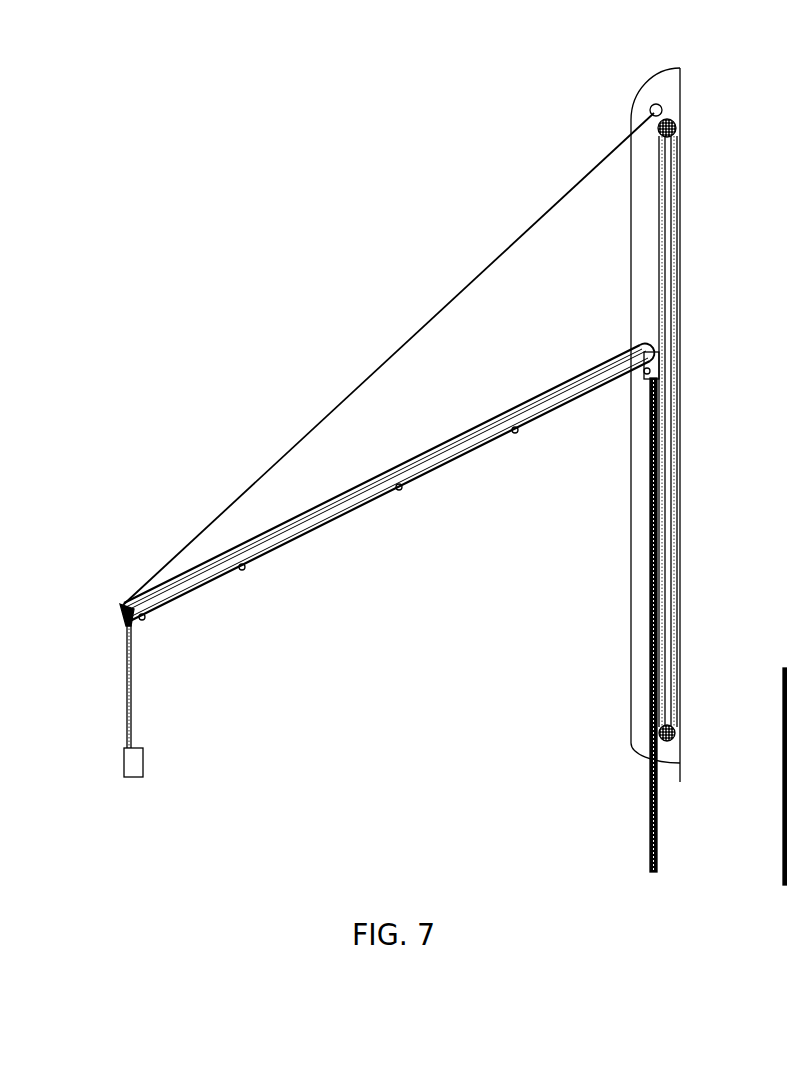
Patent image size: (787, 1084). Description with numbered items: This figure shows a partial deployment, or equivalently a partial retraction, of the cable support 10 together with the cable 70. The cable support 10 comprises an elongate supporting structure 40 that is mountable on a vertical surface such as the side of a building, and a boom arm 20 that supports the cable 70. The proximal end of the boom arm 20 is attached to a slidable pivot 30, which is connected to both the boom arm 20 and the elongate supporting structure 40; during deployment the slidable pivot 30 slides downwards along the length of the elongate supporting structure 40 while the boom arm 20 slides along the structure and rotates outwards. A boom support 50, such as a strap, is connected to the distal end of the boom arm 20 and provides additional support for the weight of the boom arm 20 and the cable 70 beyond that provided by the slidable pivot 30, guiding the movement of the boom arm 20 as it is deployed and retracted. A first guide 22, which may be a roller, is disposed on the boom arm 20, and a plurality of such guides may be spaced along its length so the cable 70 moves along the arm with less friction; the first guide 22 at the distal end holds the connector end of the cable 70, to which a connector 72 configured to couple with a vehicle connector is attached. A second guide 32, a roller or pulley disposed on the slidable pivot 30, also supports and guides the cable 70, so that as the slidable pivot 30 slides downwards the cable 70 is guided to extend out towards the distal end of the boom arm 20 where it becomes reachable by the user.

The cable support 10 is at (598, 750).
The boom arm 20 is at (580, 410).
The first guide 22 is at (148, 620).
The slidable pivot 30 is at (636, 355).
The second guide 32 is at (658, 371).
The elongate supporting structure 40 is at (668, 232).
The boom support 50 is at (384, 362).
The cable 70 is at (133, 670).
The connector 72 is at (138, 752).